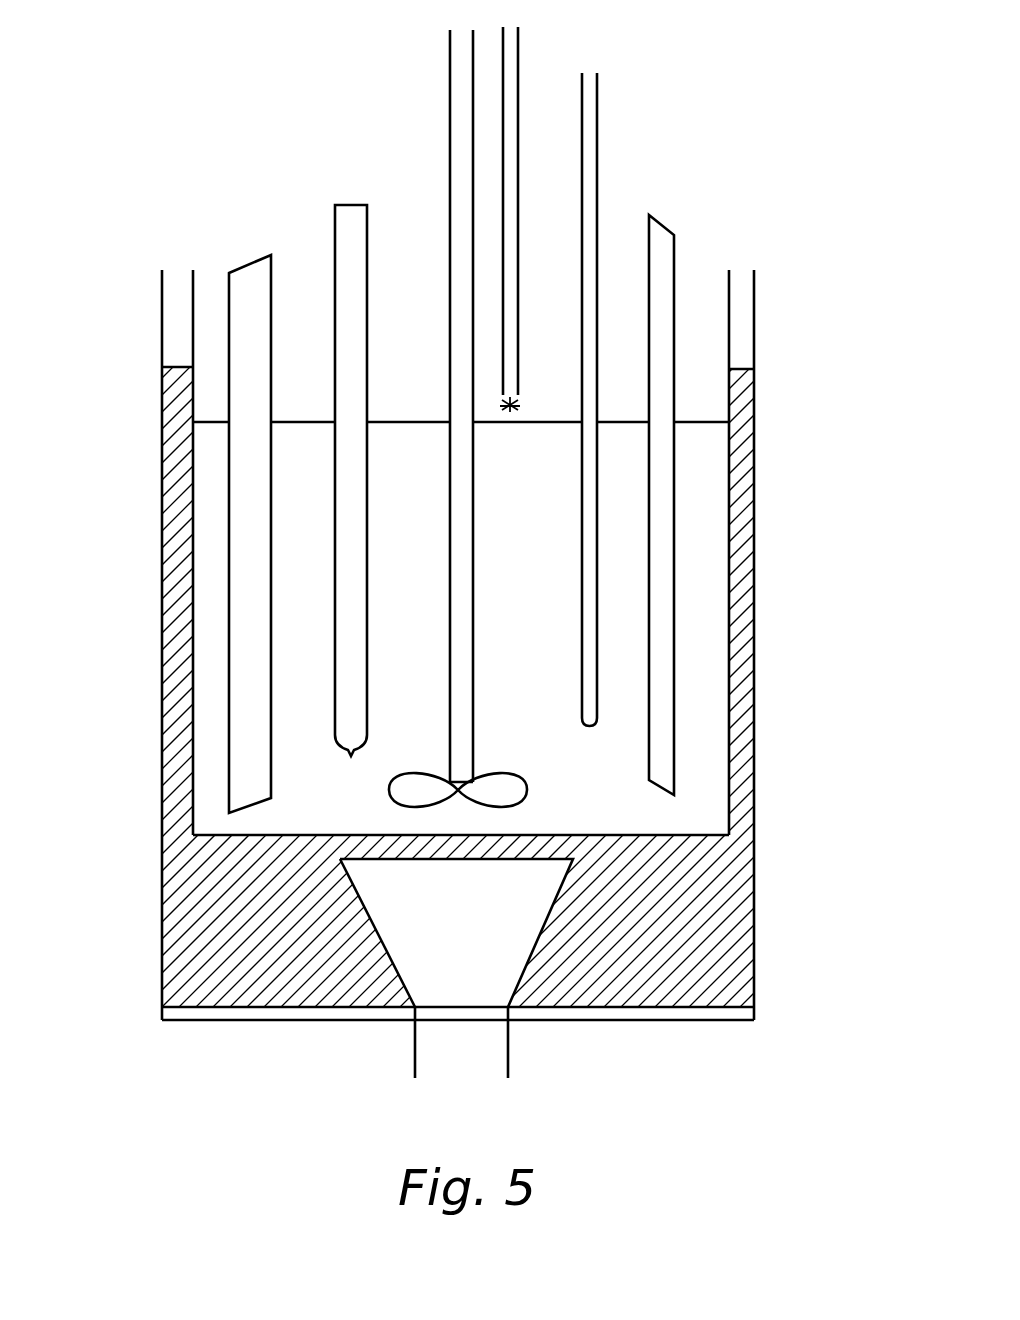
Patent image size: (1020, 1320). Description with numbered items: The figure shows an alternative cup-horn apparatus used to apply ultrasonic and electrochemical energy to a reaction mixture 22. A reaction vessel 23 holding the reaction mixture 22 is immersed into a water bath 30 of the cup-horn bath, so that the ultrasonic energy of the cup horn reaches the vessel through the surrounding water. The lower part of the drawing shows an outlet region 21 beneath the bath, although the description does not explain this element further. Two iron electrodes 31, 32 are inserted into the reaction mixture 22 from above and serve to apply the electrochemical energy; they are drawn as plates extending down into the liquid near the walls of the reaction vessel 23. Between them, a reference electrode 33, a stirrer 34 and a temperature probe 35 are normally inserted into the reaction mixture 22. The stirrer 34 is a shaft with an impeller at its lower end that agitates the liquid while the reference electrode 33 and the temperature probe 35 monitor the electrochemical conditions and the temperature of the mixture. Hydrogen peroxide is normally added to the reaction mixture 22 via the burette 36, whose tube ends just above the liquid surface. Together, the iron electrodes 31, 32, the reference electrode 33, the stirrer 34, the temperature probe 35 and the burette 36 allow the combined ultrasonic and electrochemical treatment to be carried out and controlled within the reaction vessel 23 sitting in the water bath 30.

The outlet funnel 21 is at (503, 990).
The reaction mixture 22 is at (712, 777).
The reaction vessel 23 is at (725, 638).
The water bath 30 is at (735, 833).
The iron electrode 31 is at (665, 450).
The iron electrode 32 is at (233, 525).
The reference electrode 33 is at (338, 502).
The stirrer 34 is at (472, 318).
The temperature probe 35 is at (594, 398).
The burette 36 is at (515, 245).